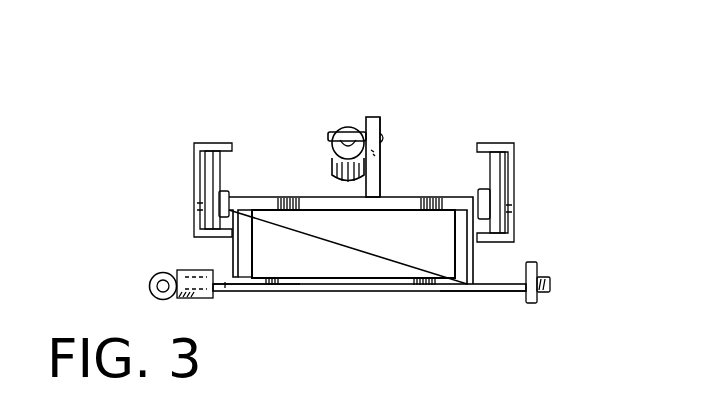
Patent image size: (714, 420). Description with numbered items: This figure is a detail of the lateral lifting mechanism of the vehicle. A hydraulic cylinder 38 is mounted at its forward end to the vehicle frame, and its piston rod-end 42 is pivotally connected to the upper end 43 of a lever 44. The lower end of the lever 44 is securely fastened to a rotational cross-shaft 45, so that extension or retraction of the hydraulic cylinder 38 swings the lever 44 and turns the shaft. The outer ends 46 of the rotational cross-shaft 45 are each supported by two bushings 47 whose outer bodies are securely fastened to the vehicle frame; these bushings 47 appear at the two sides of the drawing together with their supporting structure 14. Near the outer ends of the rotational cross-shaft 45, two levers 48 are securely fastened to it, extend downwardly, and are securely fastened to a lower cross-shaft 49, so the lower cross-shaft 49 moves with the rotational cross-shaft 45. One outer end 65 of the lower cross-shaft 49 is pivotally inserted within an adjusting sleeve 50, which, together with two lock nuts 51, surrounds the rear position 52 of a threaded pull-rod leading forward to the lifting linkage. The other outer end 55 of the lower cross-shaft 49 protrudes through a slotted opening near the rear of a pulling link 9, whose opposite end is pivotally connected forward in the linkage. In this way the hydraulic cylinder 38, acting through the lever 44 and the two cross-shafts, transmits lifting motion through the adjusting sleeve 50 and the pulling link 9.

The pulling link 9 is at (535, 303).
The support bracket 14 is at (195, 181).
The hydraulic cylinder 38 is at (330, 134).
The piston rod-end 42 is at (340, 130).
The upper end 43 is at (372, 117).
The lever 44 is at (381, 163).
The rotational cross-shaft 45 is at (351, 266).
The outer ends 46 is at (230, 200).
The bushings 47 is at (220, 200).
The levers 48 is at (253, 235).
The lower cross-shaft 49 is at (398, 291).
The adjusting sleeve 50 is at (183, 270).
The lock nuts 51 is at (150, 286).
The rear position 52 is at (152, 277).
The outer end 55 is at (502, 291).
The outer end 65 is at (226, 292).